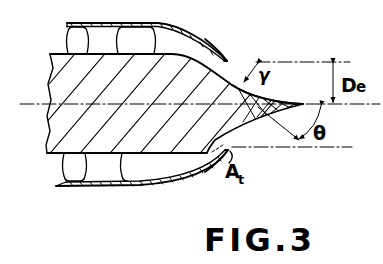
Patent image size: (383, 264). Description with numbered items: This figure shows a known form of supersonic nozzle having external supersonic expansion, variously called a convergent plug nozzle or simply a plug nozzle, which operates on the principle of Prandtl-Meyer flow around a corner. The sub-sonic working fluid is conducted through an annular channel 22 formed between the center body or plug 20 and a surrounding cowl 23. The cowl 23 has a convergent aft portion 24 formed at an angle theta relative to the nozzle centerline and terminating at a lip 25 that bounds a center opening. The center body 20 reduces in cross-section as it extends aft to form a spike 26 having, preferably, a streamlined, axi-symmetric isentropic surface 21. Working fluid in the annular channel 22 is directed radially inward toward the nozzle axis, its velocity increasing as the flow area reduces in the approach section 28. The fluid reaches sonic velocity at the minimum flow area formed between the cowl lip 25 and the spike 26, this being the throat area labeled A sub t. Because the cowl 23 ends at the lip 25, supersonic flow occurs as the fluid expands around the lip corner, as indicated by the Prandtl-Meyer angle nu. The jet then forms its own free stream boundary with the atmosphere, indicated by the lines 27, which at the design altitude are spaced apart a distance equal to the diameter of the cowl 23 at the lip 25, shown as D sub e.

The center body 20 is at (61, 60).
The isentropic surface 21 is at (266, 113).
The annular channel 22 is at (154, 26).
The cowl 23 is at (194, 27).
The convergent aft portion 24 is at (226, 58).
The lip 25 is at (230, 60).
The spike 26 is at (243, 112).
The lines 27 is at (297, 62).
The approach section 28 is at (212, 172).